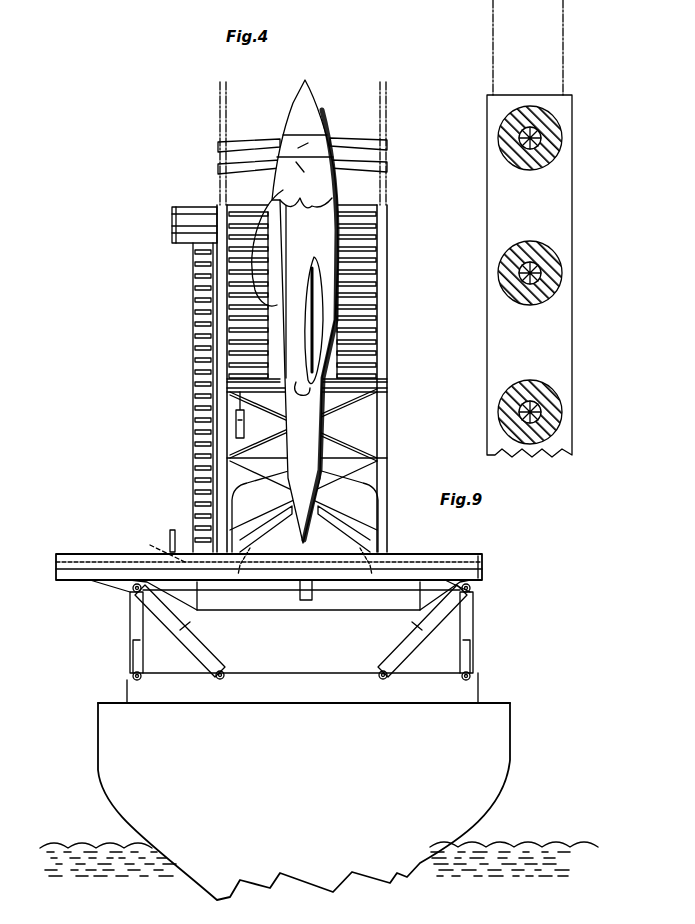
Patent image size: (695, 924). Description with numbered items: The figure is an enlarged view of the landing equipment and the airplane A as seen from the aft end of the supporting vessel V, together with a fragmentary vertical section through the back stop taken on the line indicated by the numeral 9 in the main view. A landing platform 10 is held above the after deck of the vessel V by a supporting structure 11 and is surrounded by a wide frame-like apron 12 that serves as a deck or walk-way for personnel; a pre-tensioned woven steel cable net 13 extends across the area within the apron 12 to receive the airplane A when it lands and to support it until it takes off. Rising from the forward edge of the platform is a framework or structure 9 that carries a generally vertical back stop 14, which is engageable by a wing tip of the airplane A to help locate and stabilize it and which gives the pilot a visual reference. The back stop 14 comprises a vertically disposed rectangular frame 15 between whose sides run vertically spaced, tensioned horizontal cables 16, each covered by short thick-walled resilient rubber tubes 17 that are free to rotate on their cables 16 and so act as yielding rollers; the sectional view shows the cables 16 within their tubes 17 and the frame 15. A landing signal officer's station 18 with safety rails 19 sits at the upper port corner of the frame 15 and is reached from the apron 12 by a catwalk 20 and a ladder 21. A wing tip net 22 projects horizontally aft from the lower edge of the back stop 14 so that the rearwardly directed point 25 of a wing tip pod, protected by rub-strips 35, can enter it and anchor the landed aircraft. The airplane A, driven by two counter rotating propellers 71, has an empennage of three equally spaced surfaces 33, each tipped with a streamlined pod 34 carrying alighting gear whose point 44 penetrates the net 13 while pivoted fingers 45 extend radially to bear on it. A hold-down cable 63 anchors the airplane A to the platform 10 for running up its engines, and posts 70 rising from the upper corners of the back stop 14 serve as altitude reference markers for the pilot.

In FIG. 4, the framework or structure 9 is at (325, 362).
In FIG. 4, the platform 10 is at (285, 607).
In FIG. 4, the supporting structure 11 is at (130, 620).
In FIG. 4, the apron 12 is at (76, 554).
In FIG. 4, the net 13 is at (192, 568).
In FIG. 4, the back stop 14 is at (243, 272).
In FIG. 4, the rectangular frame 15 is at (333, 295).
In FIG. 9, the rectangular frame 15 is at (566, 208).
In FIG. 4, the cables 16 is at (372, 342).
In FIG. 9, the cables 16 is at (556, 140).
In FIG. 4, the tubes 17 is at (350, 305).
In FIG. 9, the tubes 17 is at (555, 158).
In FIG. 4, the station 18 is at (182, 232).
In FIG. 4, the safety rails 19 is at (158, 209).
In FIG. 4, the catwalk 20 is at (172, 530).
In FIG. 4, the ladder 21 is at (180, 397).
In FIG. 4, the wing tip net 22 is at (345, 393).
In FIG. 4, the points 25 is at (300, 388).
In FIG. 4, the empennage surfaces 33 is at (355, 497).
In FIG. 4, the streamlined pod 34 is at (375, 545).
In FIG. 4, the rub-strips 35 is at (312, 330).
In FIG. 4, the point 44 is at (228, 560).
In FIG. 4, the fingers 45 is at (355, 560).
In FIG. 4, the cable 63 is at (318, 542).
In FIG. 4, the posts 70 is at (221, 102).
In FIG. 9, the posts 70 is at (563, 28).
In FIG. 4, the counter rotating propellers 71 is at (248, 140).
In FIG. 4, the airplane A is at (309, 300).
In FIG. 4, the vessel V is at (510, 748).